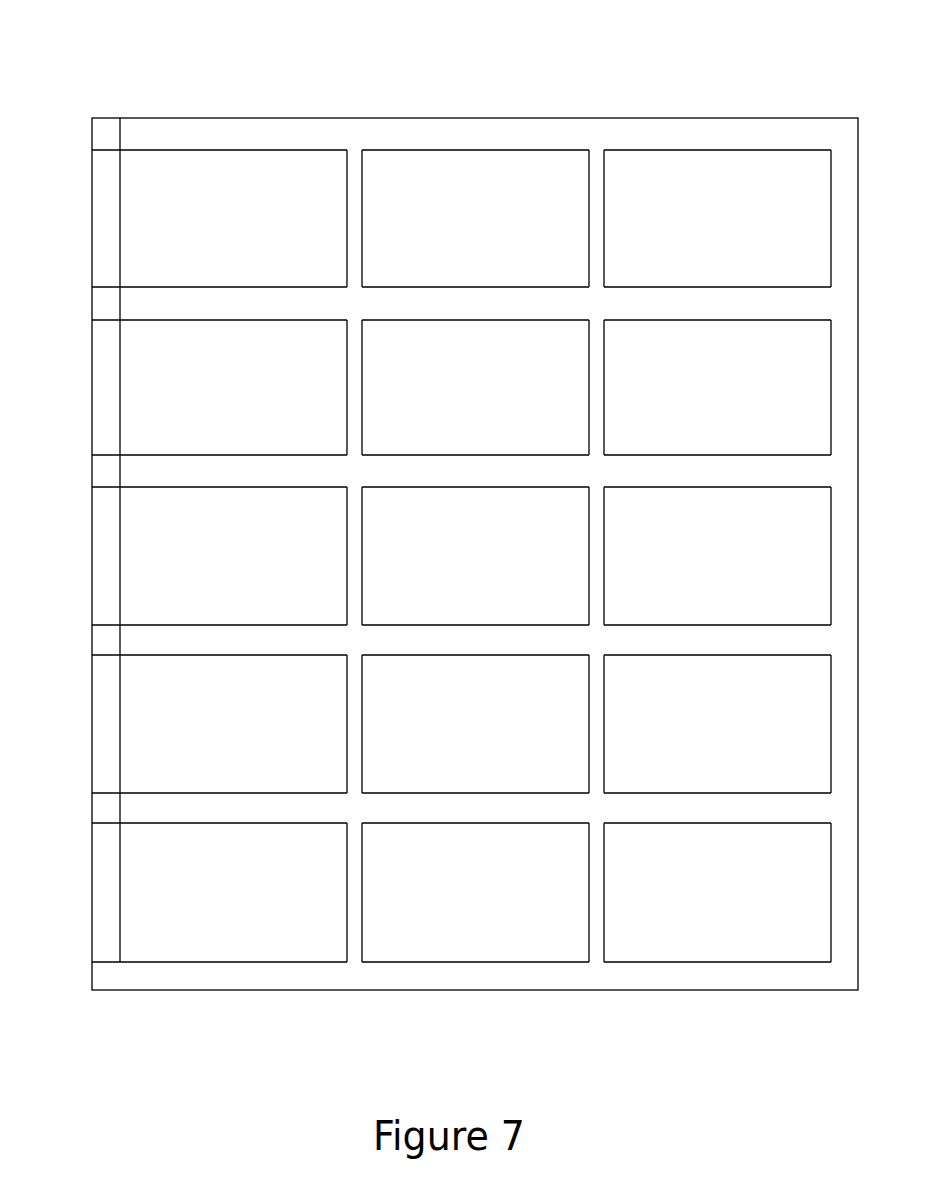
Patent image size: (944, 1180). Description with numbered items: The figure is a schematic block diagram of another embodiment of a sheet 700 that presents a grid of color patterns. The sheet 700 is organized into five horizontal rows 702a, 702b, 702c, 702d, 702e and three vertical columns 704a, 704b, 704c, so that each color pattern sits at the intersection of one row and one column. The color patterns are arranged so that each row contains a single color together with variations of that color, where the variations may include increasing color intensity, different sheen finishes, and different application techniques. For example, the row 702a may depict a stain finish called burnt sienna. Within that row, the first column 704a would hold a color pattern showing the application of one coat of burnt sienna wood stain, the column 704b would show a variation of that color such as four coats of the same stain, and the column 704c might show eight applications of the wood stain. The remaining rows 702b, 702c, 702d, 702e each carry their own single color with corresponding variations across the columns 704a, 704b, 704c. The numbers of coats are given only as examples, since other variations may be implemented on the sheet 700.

The sheet 700 is at (145, 90).
The row 702a is at (92, 287).
The row 702b is at (92, 320).
The row 702c is at (92, 487).
The row 702d is at (92, 655).
The row 702e is at (92, 962).
The first column 704a is at (347, 118).
The column 704b is at (589, 118).
The column 704c is at (831, 118).